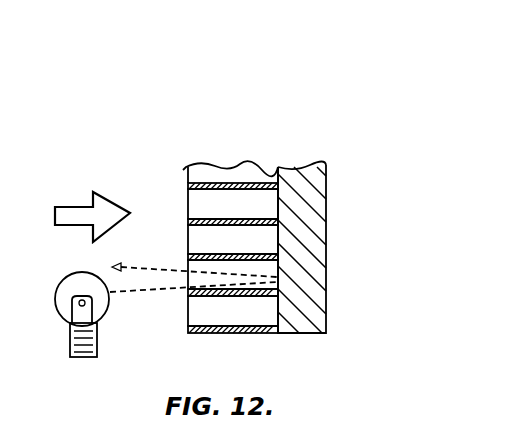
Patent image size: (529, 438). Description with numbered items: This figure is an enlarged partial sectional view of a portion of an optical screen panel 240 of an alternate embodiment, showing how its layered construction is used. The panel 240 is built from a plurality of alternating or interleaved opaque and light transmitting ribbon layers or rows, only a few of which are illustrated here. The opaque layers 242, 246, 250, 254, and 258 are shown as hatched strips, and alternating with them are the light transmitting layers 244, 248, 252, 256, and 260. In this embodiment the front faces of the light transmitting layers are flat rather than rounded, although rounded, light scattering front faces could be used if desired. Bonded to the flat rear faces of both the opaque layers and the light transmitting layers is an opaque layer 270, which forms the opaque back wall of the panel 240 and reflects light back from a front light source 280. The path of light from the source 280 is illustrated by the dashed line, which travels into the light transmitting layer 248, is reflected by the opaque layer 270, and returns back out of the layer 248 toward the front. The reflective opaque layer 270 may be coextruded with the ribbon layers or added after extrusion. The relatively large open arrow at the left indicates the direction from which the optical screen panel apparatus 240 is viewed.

The panel 240 is at (227, 94).
The opaque layer 242 is at (227, 335).
The light transmitting layer 244 is at (200, 313).
The opaque layer 246 is at (188, 300).
The light transmitting layer 248 is at (273, 268).
The opaque layer 250 is at (188, 257).
The light transmitting layer 252 is at (262, 240).
The opaque layer 254 is at (188, 222).
The light transmitting layer 256 is at (188, 193).
The opaque layer 258 is at (229, 183).
The light transmitting layer 260 is at (203, 165).
The opaque layer 270 is at (292, 170).
The front light source 280 is at (67, 273).